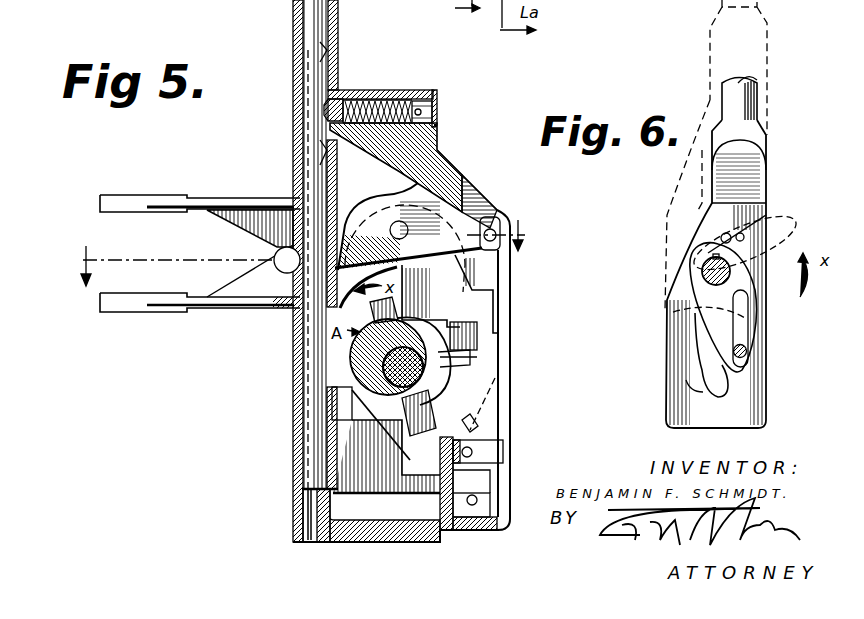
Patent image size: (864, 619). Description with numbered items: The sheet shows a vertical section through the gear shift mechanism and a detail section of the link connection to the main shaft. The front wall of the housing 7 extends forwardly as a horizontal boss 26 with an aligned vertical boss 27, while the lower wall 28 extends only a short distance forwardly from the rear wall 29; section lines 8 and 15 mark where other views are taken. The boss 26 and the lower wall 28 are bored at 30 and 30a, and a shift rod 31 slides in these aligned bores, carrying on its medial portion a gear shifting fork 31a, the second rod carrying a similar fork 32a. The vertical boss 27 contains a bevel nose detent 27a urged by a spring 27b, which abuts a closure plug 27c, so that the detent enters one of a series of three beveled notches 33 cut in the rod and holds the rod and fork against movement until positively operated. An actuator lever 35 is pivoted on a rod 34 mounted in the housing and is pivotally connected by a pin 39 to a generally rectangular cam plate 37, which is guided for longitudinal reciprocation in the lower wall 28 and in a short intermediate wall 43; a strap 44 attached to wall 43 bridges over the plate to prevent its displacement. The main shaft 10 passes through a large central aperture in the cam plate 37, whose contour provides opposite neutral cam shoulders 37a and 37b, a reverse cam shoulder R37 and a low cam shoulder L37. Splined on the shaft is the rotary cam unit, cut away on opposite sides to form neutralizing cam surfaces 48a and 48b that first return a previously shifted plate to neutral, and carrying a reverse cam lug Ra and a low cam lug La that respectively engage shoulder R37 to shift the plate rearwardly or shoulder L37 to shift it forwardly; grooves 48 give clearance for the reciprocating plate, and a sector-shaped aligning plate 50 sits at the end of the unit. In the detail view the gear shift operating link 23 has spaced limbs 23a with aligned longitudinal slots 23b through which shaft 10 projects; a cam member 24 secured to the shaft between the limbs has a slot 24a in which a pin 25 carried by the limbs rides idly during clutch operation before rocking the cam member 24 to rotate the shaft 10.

In FIG. 5, the housing 7 is at (462, 15).
In FIG. 5, the section line 8 is at (518, 27).
In FIG. 5, the main shaft 10 is at (402, 367).
In FIG. 6, the main shaft 10 is at (705, 272).
In FIG. 5, the section line 15 is at (297, 253).
In FIG. 6, the gear shift operating link 23 is at (758, 100).
In FIG. 6, the limbs 23a is at (770, 396).
In FIG. 6, the longitudinal slots 23b is at (707, 390).
In FIG. 6, the cam member 24 is at (717, 326).
In FIG. 6, the slot 24a is at (745, 326).
In FIG. 6, the pin 25 is at (746, 353).
In FIG. 5, the horizontal bosses 26 is at (338, 42).
In FIG. 5, the vertical bosses 27 is at (423, 90).
In FIG. 5, the bevel nose detent 27a is at (338, 98).
In FIG. 5, the spring 27b is at (383, 98).
In FIG. 5, the closure plug 27c is at (440, 107).
In FIG. 5, the lower wall 28 is at (297, 413).
In FIG. 5, the rear wall 29 is at (398, 538).
In FIG. 5, the bore 30 is at (323, 22).
In FIG. 5, the bore 30a is at (297, 533).
In FIG. 5, the shift rod 31 is at (313, 430).
In FIG. 5, the gear shifting fork 31a is at (237, 312).
In FIG. 5, the gear shifting fork 32a is at (219, 195).
In FIG. 5, the beveled notches 33 is at (323, 160).
In FIG. 5, the rod 34 is at (503, 220).
In FIG. 5, the actuator lever 35 is at (458, 218).
In FIG. 5, the cam plate 37 is at (483, 305).
In FIG. 5, the neutral cam shoulder 37a is at (453, 323).
In FIG. 5, the neutral cam shoulder 37b is at (372, 400).
In FIG. 5, the pin 39 is at (404, 226).
In FIG. 5, the intermediate wall 43 is at (448, 532).
In FIG. 5, the strap 44 is at (507, 452).
In FIG. 5, the grooves 48 is at (477, 380).
In FIG. 5, the neutralizing cam surface 48a is at (440, 340).
In FIG. 5, the neutralizing cam surface 48b is at (350, 388).
In FIG. 5, the sector-shaped aligning plate 50 is at (430, 458).
In FIG. 5, the reverse cam shoulder R37 is at (385, 360).
In FIG. 5, the reverse cam lug Ra is at (372, 311).
In FIG. 5, the low cam shoulder L37 is at (477, 357).
In FIG. 5, the low cam lug La is at (440, 420).